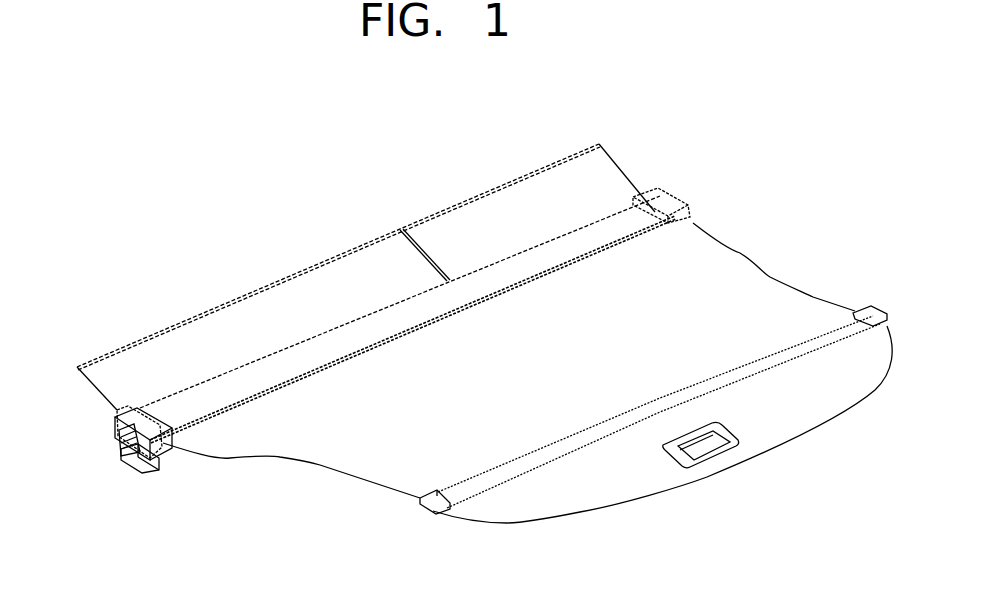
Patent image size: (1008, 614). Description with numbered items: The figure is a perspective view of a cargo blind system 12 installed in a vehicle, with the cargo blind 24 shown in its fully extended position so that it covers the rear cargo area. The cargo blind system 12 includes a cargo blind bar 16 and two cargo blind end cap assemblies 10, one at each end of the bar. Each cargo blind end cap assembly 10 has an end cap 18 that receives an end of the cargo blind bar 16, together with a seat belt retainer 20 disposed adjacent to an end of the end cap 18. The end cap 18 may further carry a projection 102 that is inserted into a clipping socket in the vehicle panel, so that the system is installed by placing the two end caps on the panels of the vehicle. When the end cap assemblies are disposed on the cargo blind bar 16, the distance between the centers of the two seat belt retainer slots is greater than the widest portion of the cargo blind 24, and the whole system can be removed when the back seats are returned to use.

The cargo blind end cap assembly 10 is at (672, 191).
The cargo blind system 12 is at (737, 220).
The cargo blind bar 16 is at (590, 237).
The end cap 18 is at (118, 410).
The projection 102 is at (125, 430).
The seat belt retainer 20 is at (122, 458).
The cargo blind 24 is at (772, 290).